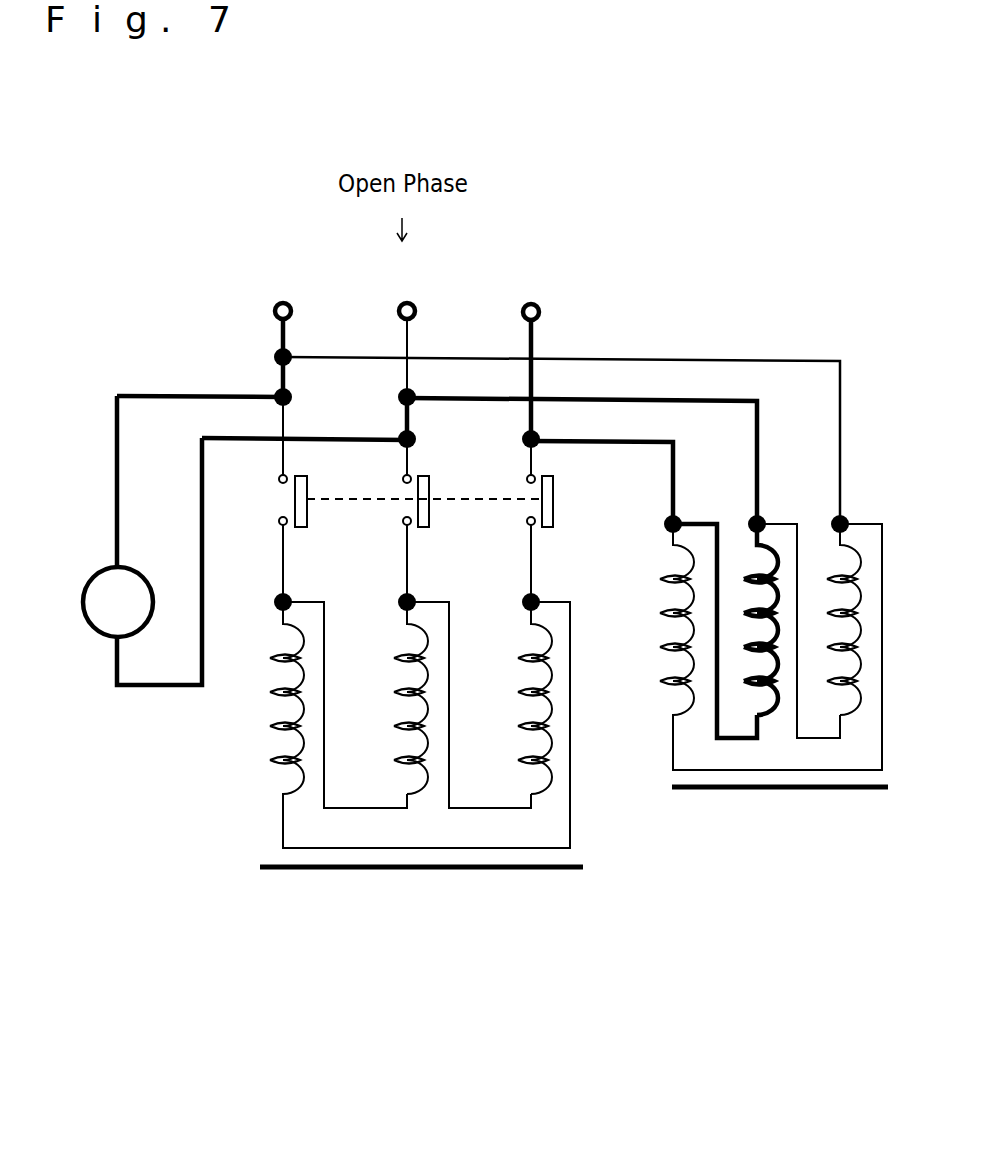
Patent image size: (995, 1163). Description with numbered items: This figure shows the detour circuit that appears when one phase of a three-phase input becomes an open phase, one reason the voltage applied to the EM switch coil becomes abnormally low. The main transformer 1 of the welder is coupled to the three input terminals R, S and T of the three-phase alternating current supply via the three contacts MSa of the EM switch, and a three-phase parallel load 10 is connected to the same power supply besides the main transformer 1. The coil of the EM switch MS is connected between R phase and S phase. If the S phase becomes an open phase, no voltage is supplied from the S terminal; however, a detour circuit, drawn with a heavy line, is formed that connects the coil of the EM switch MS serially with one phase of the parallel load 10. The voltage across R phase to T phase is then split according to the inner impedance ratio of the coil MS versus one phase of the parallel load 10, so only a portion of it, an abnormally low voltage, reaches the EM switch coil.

The main transformer 1 is at (373, 872).
The three-phase parallel load 10 is at (778, 800).
The EM switch coil MS is at (142, 540).
The contacts of EM switch MSa is at (416, 501).
The input terminal R is at (284, 325).
The input terminal S is at (404, 325).
The input terminal T is at (529, 346).